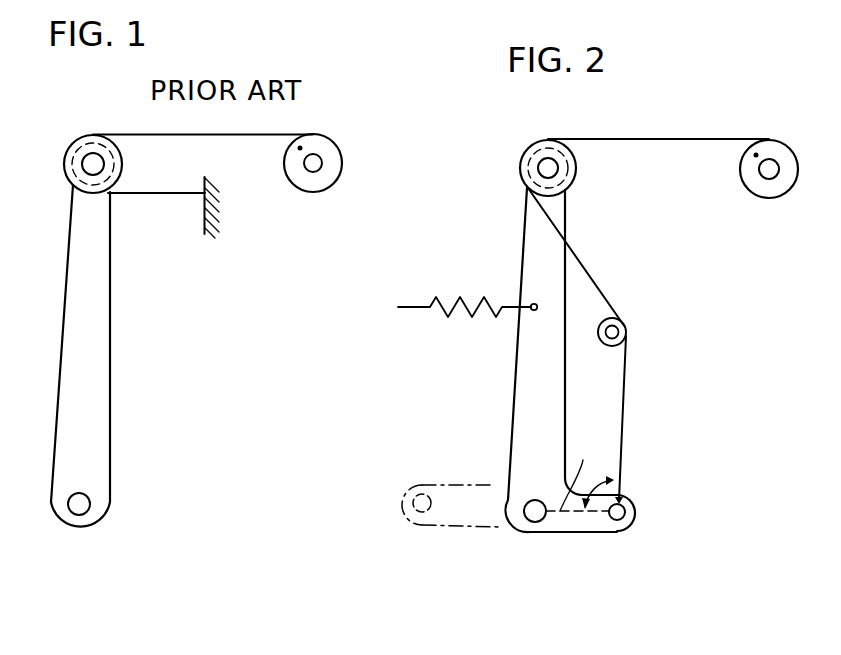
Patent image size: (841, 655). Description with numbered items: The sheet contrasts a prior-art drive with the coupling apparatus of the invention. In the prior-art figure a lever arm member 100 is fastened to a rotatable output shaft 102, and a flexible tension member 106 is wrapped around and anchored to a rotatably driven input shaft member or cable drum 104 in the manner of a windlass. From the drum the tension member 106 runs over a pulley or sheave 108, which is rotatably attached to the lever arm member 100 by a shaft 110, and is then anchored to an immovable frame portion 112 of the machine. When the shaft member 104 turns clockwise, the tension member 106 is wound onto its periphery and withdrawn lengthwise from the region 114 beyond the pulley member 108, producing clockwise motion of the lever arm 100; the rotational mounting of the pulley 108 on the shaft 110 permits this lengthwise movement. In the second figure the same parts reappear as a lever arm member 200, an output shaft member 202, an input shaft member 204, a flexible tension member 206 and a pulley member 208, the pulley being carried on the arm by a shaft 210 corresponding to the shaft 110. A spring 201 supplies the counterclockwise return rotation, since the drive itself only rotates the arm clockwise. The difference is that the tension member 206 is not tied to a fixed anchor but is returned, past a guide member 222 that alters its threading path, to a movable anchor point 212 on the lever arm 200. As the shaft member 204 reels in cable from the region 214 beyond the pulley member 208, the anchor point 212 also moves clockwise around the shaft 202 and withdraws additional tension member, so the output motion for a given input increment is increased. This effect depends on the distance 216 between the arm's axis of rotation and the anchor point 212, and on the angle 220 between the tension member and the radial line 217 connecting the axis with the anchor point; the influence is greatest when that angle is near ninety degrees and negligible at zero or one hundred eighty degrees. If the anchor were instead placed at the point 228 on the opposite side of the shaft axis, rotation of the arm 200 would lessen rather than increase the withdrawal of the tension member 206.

In FIG. 1, the lever arm member 100 is at (100, 298).
In FIG. 1, the rotatable output shaft 102 is at (90, 503).
In FIG. 1, the input shaft member or cable drum 104 is at (321, 147).
In FIG. 1, the flexible tension member 106 is at (140, 133).
In FIG. 1, the pulley or sheave 108 is at (70, 170).
In FIG. 1, the shaft 110 is at (85, 158).
In FIG. 1, the immovable frame portion 112 is at (208, 228).
In FIG. 1, the region beyond pulley member 114 is at (192, 199).
In FIG. 2, the lever arm member 200 is at (536, 249).
In FIG. 2, the spring 201 is at (422, 309).
In FIG. 2, the output shaft member 202 is at (524, 519).
In FIG. 2, the input shaft member 204 is at (783, 126).
In FIG. 2, the flexible tension member 206 is at (668, 138).
In FIG. 2, the pulley member 208 is at (522, 165).
In FIG. 2, the pulley shaft 210 is at (545, 160).
In FIG. 2, the movable anchor point 212 is at (634, 512).
In FIG. 2, the region beyond pulley member 214 is at (577, 242).
In FIG. 2, the distance between axis of rotation and anchor point 216 is at (623, 538).
In FIG. 2, the center line 217 is at (588, 473).
In FIG. 2, the angle between flexible tension member and radial line 220 is at (598, 478).
In FIG. 2, the guide member 222 is at (626, 326).
In FIG. 2, the alternate anchor point location 228 is at (412, 503).